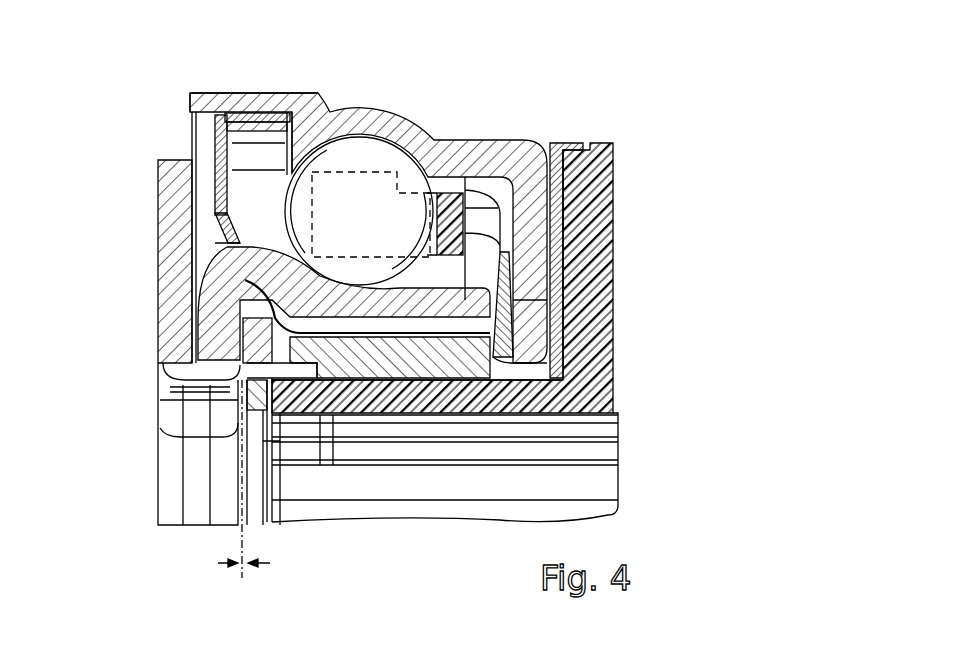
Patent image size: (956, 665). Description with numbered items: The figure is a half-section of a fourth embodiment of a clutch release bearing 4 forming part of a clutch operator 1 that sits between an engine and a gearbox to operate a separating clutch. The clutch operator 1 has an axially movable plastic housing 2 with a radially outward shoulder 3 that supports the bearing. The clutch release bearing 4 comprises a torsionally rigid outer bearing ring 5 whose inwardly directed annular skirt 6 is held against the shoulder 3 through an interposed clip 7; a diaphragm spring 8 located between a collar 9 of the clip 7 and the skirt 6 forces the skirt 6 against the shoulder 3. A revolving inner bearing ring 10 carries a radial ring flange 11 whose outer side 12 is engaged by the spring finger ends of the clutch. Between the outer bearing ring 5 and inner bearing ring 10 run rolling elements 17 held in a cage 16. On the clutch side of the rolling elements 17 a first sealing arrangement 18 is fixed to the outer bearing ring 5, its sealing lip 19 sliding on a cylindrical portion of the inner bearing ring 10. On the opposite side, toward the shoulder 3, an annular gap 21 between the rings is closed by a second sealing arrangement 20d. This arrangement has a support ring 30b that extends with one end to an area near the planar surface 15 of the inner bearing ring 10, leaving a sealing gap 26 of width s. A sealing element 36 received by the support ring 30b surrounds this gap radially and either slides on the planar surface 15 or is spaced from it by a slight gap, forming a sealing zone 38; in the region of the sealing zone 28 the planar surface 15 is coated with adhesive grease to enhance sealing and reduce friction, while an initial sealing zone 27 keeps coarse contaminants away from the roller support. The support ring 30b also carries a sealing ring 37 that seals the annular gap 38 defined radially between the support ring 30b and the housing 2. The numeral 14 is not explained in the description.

The clutch release bearing 4 is at (141, 72).
The clutch operator 1 is at (442, 100).
The outer bearing ring 5 is at (380, 118).
The rolling elements 17 is at (355, 146).
The first sealing arrangement 18 is at (236, 96).
The cage 16 is at (447, 193).
The annular skirt 6 is at (528, 240).
The clip 7 is at (563, 180).
The shoulder 3 is at (593, 215).
The housing 2 is at (593, 395).
The annular gap 21 is at (563, 277).
The diaphragm spring 8 is at (535, 305).
The inner bearing ring 10 is at (543, 330).
The collar 9 is at (560, 363).
The radial ring flange 11 is at (168, 183).
The outer side 12 is at (213, 232).
The sealing lip 19 is at (230, 243).
The planar surface 15 is at (237, 340).
The sealing zone 28 is at (300, 332).
The sealing element 36 is at (227, 350).
The sealing ring 37 is at (343, 407).
The annular gap 38 is at (393, 413).
The support ring 30b is at (440, 400).
The second sealing arrangement 20d is at (310, 410).
The sealing zone 27 is at (195, 367).
The seal ring 14 is at (225, 401).
The sealing gap 26 is at (240, 463).
The width of sealing gap s is at (237, 479).